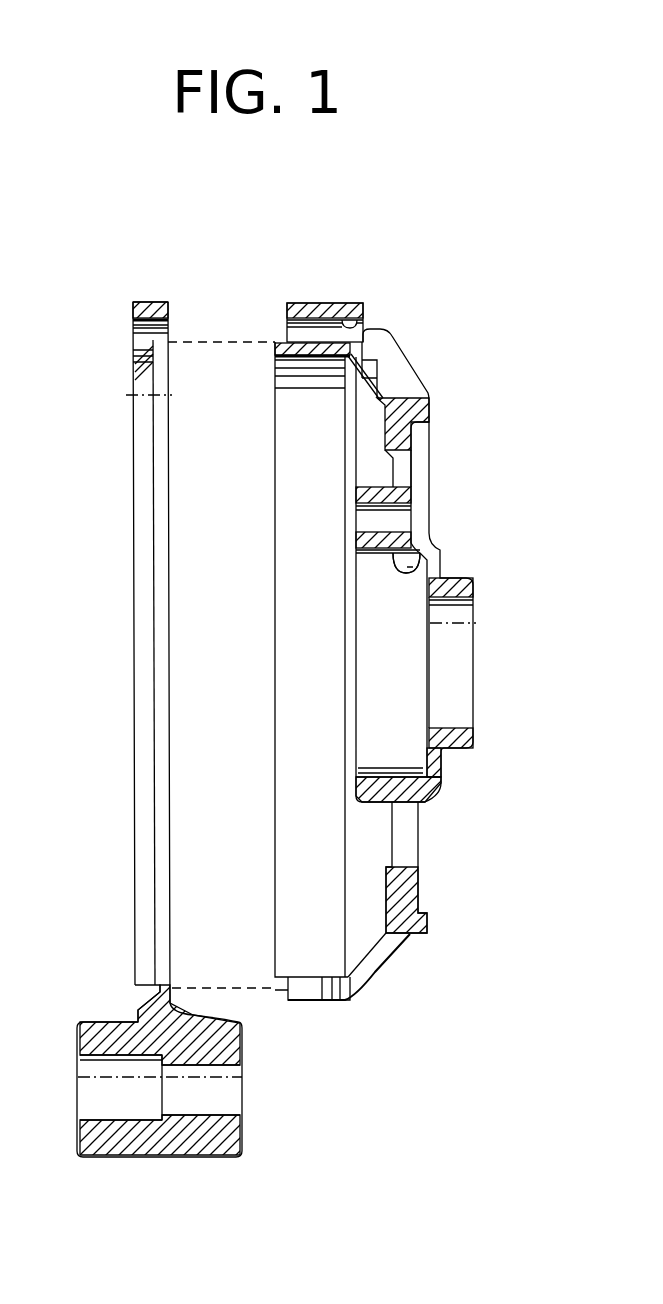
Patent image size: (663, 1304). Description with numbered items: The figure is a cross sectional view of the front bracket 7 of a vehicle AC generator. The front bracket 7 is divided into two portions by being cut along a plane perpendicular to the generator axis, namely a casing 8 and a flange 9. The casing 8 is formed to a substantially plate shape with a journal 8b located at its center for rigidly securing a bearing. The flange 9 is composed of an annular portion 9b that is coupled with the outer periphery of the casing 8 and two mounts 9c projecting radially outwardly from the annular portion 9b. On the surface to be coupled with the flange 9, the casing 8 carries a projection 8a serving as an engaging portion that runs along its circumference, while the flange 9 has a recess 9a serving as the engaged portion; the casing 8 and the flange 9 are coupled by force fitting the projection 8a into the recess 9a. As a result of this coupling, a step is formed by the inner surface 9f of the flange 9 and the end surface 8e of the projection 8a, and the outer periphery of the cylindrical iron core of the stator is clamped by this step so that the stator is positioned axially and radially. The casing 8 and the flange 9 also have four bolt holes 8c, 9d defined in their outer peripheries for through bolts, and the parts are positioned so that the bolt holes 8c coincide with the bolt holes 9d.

The front bracket 7 is at (249, 223).
The casing 8 is at (435, 417).
The projection 8a is at (273, 795).
The journal 8b is at (423, 565).
The bolt holes 8c is at (363, 326).
The end surface 8e is at (273, 385).
The flange 9 is at (148, 300).
The recess 9a is at (170, 918).
The annular portion 9b is at (167, 313).
The bolt holes 9d is at (140, 328).
The inner surface 9f is at (140, 366).
The mounts 9c is at (242, 1133).